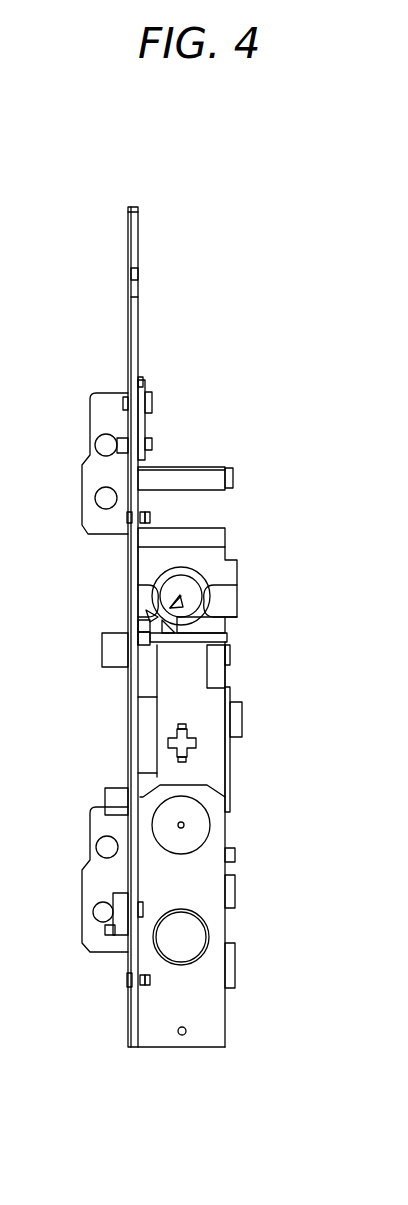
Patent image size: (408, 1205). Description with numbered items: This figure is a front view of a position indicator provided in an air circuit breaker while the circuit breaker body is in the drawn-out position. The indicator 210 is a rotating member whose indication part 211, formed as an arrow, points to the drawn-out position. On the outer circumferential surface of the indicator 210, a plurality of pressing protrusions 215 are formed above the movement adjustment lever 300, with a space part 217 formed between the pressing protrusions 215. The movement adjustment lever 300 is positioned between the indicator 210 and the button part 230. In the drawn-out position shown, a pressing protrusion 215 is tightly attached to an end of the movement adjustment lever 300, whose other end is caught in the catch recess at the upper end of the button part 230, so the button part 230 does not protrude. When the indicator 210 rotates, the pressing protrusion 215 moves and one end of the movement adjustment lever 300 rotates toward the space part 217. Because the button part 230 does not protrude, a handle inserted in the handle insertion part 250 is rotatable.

The indicator 210 is at (183, 582).
The indication part 211 is at (193, 596).
The pressing protrusions 215 is at (162, 622).
The space part 217 is at (150, 626).
The button part 230 is at (195, 720).
The handle insertion part 250 is at (200, 828).
The movement adjustment lever 300 is at (183, 627).